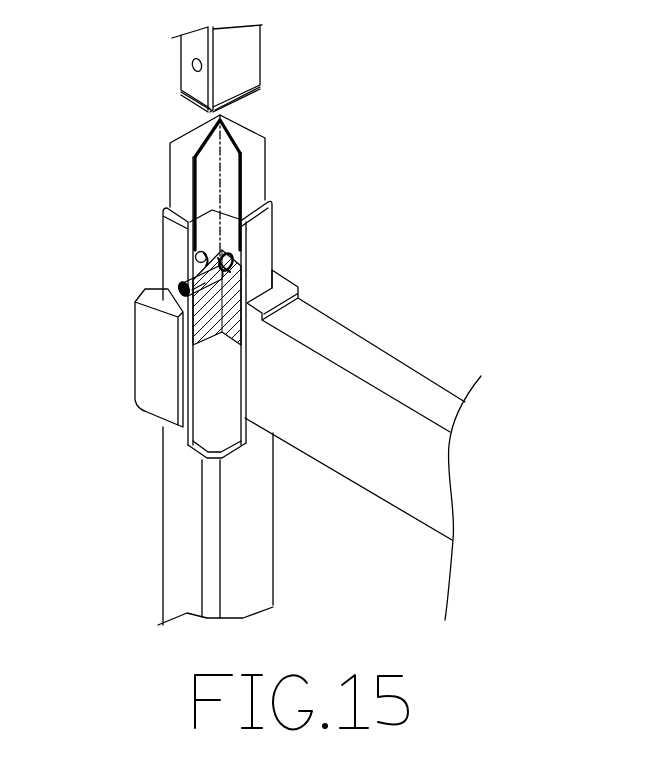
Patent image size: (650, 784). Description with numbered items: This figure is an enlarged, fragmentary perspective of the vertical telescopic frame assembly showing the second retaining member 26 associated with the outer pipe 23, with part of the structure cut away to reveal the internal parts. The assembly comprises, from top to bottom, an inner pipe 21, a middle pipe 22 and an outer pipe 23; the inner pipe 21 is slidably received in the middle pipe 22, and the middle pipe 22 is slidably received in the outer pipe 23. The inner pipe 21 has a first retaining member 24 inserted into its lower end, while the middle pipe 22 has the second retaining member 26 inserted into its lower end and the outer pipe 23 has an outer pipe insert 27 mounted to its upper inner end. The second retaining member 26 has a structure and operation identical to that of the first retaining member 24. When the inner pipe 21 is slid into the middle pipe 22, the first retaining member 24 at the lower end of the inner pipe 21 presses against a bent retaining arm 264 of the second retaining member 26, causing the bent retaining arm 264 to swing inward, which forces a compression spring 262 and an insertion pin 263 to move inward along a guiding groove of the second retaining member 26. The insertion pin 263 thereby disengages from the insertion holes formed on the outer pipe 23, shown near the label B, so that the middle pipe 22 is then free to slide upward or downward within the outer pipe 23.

The inner pipe 21 is at (252, 50).
The first retaining member 24 is at (237, 100).
The middle pipe 22 is at (255, 165).
The outer pipe 23 is at (247, 566).
The outer pipe insert 27 is at (167, 207).
The second retaining member 26 is at (240, 250).
The compression spring 262 is at (240, 265).
The insertion pin 263 is at (209, 344).
The bent retaining arm 264 is at (190, 264).
The direction B is at (182, 287).